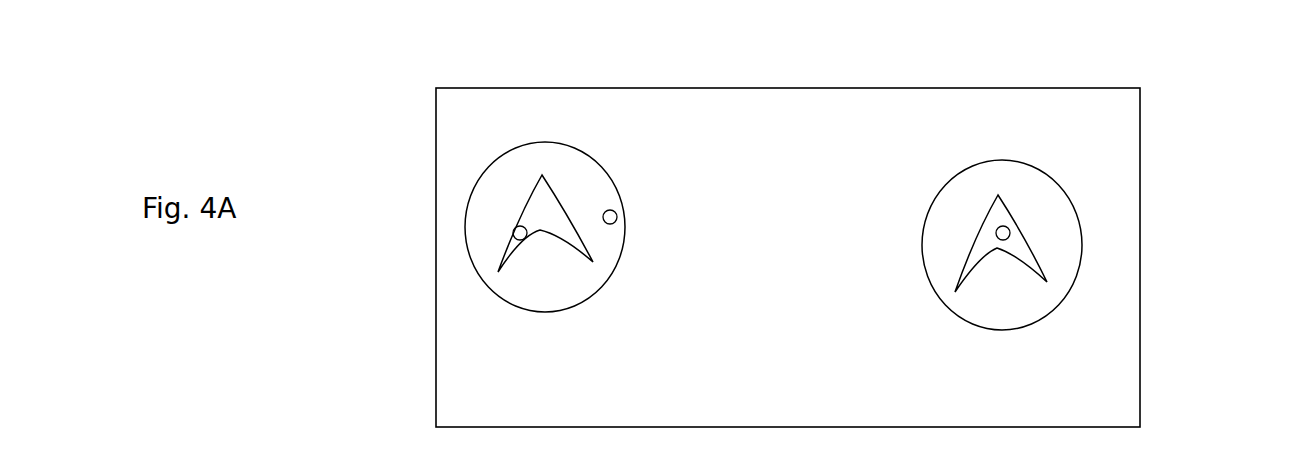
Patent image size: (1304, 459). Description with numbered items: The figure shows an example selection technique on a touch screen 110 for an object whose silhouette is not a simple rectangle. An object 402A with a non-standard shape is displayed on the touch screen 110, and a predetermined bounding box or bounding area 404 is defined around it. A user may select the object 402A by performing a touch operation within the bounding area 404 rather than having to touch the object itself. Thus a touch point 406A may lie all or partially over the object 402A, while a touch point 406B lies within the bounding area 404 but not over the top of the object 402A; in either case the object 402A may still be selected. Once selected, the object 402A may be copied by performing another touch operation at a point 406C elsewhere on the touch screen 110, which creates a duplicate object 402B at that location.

The touch screen 110 is at (1140, 263).
The bounding area 404 is at (480, 275).
The object 402A is at (542, 175).
The object 402B is at (998, 195).
The touch point 406A is at (522, 240).
The touch point 406B is at (613, 224).
The point 406C is at (1007, 240).